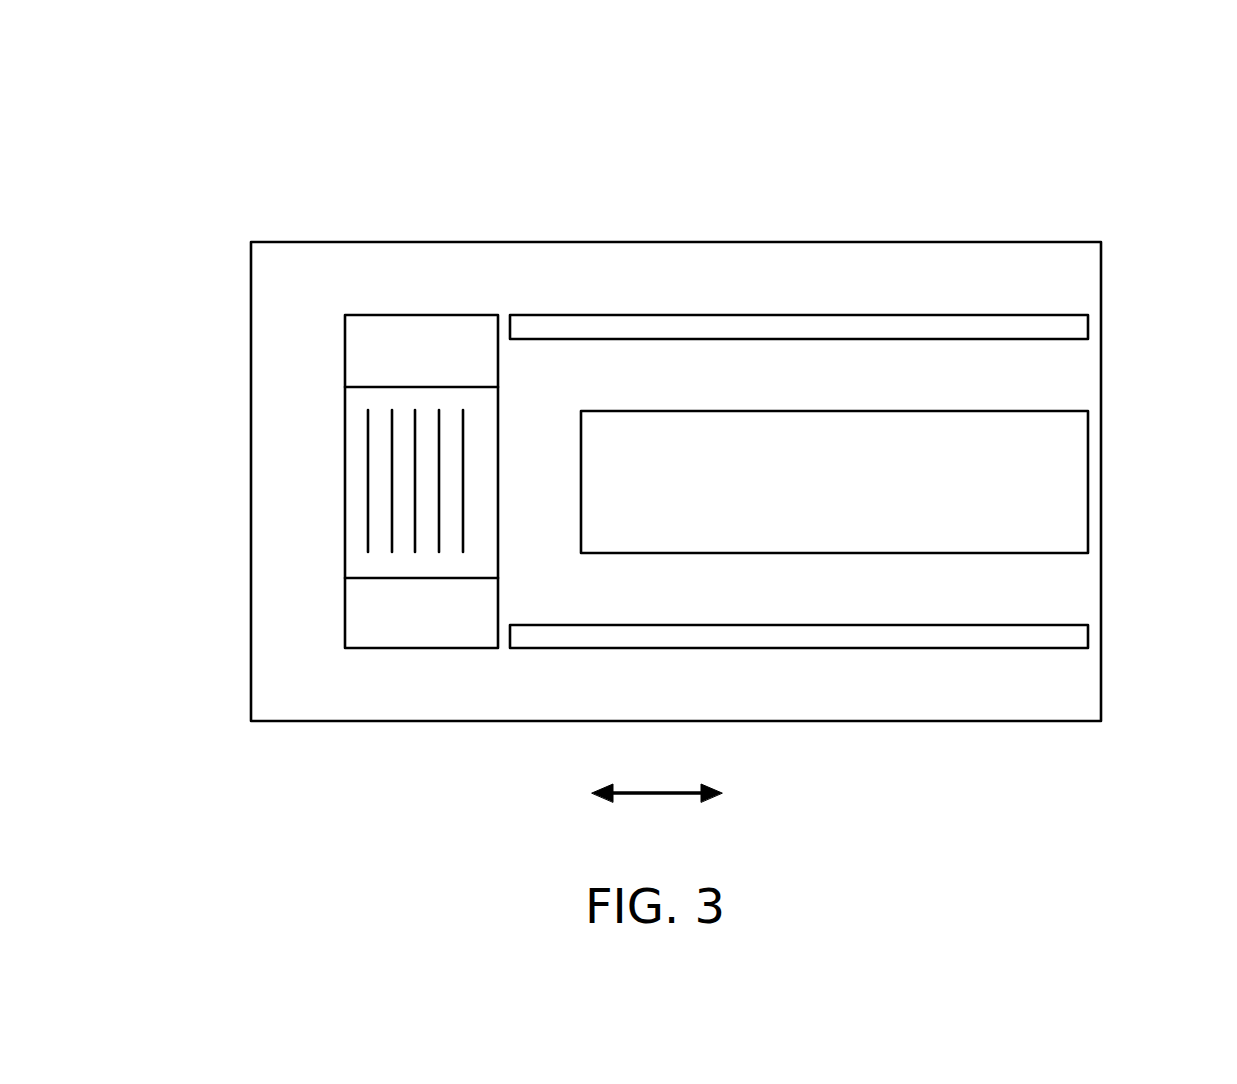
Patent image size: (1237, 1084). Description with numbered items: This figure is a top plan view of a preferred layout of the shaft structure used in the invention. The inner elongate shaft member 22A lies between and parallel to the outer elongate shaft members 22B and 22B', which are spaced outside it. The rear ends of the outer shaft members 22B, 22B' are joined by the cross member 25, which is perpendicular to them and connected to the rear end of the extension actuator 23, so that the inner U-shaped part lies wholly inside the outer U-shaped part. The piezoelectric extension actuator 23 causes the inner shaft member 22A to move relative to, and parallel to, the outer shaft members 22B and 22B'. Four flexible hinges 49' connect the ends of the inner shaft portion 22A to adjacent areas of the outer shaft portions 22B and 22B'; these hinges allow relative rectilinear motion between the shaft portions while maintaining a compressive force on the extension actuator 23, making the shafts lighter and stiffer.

The cross member 25 is at (287, 553).
The extension actuator 23 is at (405, 458).
The outer elongate shaft member 22B is at (867, 251).
The inner elongate shaft member 22A is at (1052, 375).
The outer elongate shaft member 22B' is at (873, 669).
The flexible hinges 49' is at (676, 348).